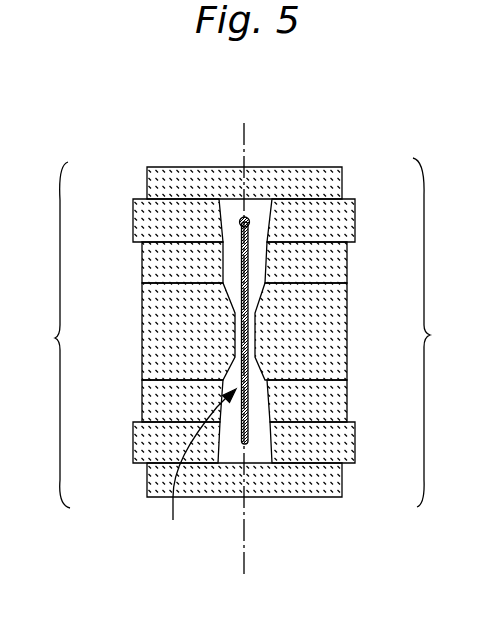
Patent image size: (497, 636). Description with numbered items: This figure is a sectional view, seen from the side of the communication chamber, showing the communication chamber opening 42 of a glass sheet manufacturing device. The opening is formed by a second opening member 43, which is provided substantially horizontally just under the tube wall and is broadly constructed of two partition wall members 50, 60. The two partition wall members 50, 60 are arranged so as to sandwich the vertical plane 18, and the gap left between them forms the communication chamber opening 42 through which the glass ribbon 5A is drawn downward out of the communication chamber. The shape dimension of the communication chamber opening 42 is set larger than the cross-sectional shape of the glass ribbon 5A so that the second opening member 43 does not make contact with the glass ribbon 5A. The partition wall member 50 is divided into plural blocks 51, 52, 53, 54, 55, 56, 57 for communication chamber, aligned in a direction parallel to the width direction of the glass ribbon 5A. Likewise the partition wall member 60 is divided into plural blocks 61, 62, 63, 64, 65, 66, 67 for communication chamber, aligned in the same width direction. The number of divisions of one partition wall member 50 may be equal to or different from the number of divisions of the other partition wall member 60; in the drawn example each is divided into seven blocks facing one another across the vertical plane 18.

The second opening member 43 is at (241, 353).
The partition wall member 50 is at (49, 349).
The partition wall member 60 is at (455, 346).
The block for communication chamber 51 is at (160, 193).
The block for communication chamber 52 is at (160, 229).
The block for communication chamber 53 is at (160, 268).
The block for communication chamber 54 is at (160, 335).
The block for communication chamber 55 is at (160, 406).
The block for communication chamber 56 is at (150, 447).
The block for communication chamber 57 is at (165, 482).
The block for communication chamber 61 is at (327, 188).
The block for communication chamber 62 is at (330, 227).
The block for communication chamber 63 is at (330, 271).
The block for communication chamber 64 is at (330, 335).
The block for communication chamber 65 is at (330, 410).
The block for communication chamber 66 is at (330, 449).
The block for communication chamber 67 is at (330, 487).
The glass ribbon 5A is at (246, 264).
The communication chamber opening 42 is at (199, 469).
The vertical plane 18 is at (250, 566).